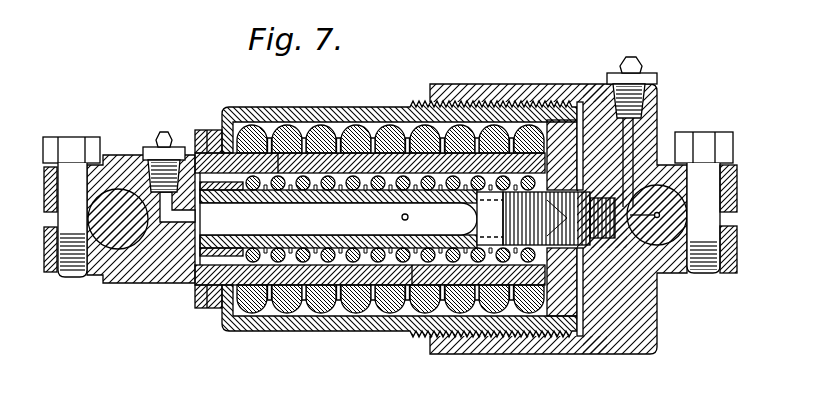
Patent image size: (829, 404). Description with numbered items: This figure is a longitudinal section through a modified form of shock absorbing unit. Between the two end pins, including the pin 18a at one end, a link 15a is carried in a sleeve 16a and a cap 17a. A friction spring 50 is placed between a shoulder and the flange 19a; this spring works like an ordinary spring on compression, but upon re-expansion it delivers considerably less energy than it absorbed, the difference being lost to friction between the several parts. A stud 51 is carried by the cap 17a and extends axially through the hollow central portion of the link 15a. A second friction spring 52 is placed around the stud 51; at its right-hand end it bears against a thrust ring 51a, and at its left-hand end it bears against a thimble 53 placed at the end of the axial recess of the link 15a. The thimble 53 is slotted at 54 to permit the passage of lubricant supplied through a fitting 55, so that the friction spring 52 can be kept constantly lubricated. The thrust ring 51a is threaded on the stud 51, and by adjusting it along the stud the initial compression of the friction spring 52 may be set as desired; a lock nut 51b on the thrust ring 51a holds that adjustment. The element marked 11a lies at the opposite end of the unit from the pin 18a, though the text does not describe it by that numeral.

The housing end member 11a is at (125, 247).
The link 15a is at (172, 273).
The sleeve 16a is at (295, 327).
The cap 17a is at (492, 95).
The pin 18a is at (670, 273).
The flange 19a is at (535, 348).
The friction spring 50 is at (410, 308).
The stud 51 is at (487, 228).
The thrust ring 51a is at (548, 176).
The lock nut 51b is at (556, 178).
The second friction spring 52 is at (360, 257).
The thimble 53 is at (223, 258).
The slot 54 is at (208, 180).
The fitting 55 is at (163, 150).